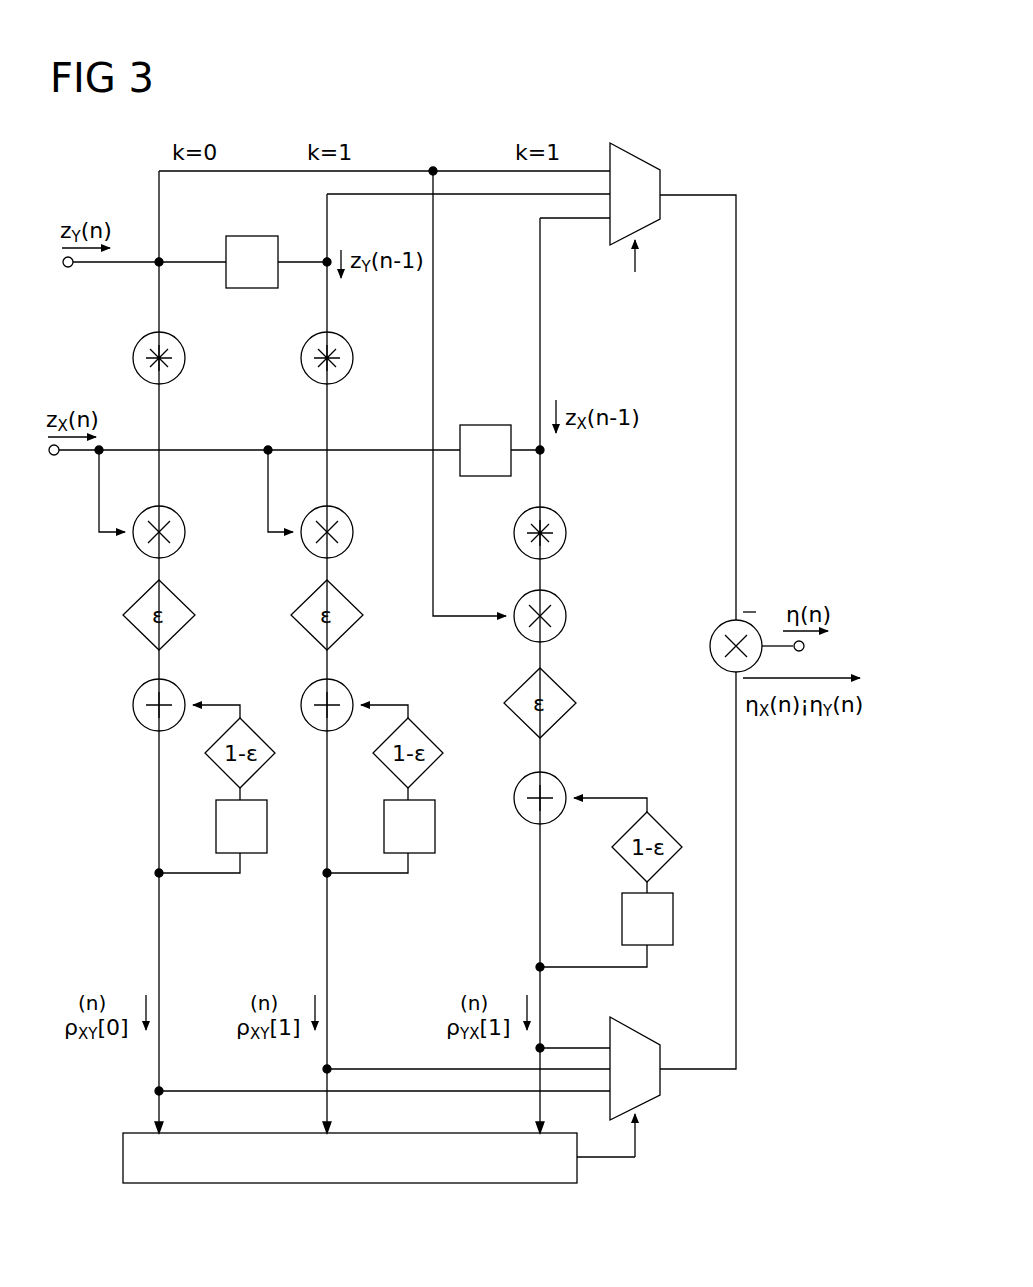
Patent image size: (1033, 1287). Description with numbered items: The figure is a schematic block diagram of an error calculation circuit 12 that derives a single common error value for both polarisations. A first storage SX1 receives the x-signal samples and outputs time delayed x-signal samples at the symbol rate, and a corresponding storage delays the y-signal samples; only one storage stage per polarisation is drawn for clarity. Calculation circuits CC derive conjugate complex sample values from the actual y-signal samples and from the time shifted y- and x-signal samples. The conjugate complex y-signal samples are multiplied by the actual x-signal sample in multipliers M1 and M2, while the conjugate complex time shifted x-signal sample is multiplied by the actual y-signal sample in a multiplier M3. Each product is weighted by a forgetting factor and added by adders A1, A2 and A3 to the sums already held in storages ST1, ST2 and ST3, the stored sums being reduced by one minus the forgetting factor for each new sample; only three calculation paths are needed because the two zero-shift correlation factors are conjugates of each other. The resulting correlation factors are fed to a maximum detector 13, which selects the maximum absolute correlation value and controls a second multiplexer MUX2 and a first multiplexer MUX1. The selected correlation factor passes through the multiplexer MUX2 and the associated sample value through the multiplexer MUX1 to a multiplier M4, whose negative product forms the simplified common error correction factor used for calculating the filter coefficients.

The correlation estimation unit 12 is at (131, 163).
The maximum detector 13 is at (123, 1160).
The first storage SX1 is at (252, 236).
The calculation circuits CC is at (183, 365).
The multiplier M1 is at (180, 549).
The multiplier M2 is at (348, 549).
The multiplier M3 is at (566, 617).
The multiplier M4 is at (716, 667).
The adder A1 is at (138, 718).
The adder A2 is at (304, 690).
The adder A3 is at (519, 817).
The storage ST1 is at (213, 830).
The storage ST2 is at (381, 830).
The storage ST3 is at (606, 924).
The first multiplexer MUX1 is at (632, 152).
The second multiplexer MUX2 is at (662, 1083).